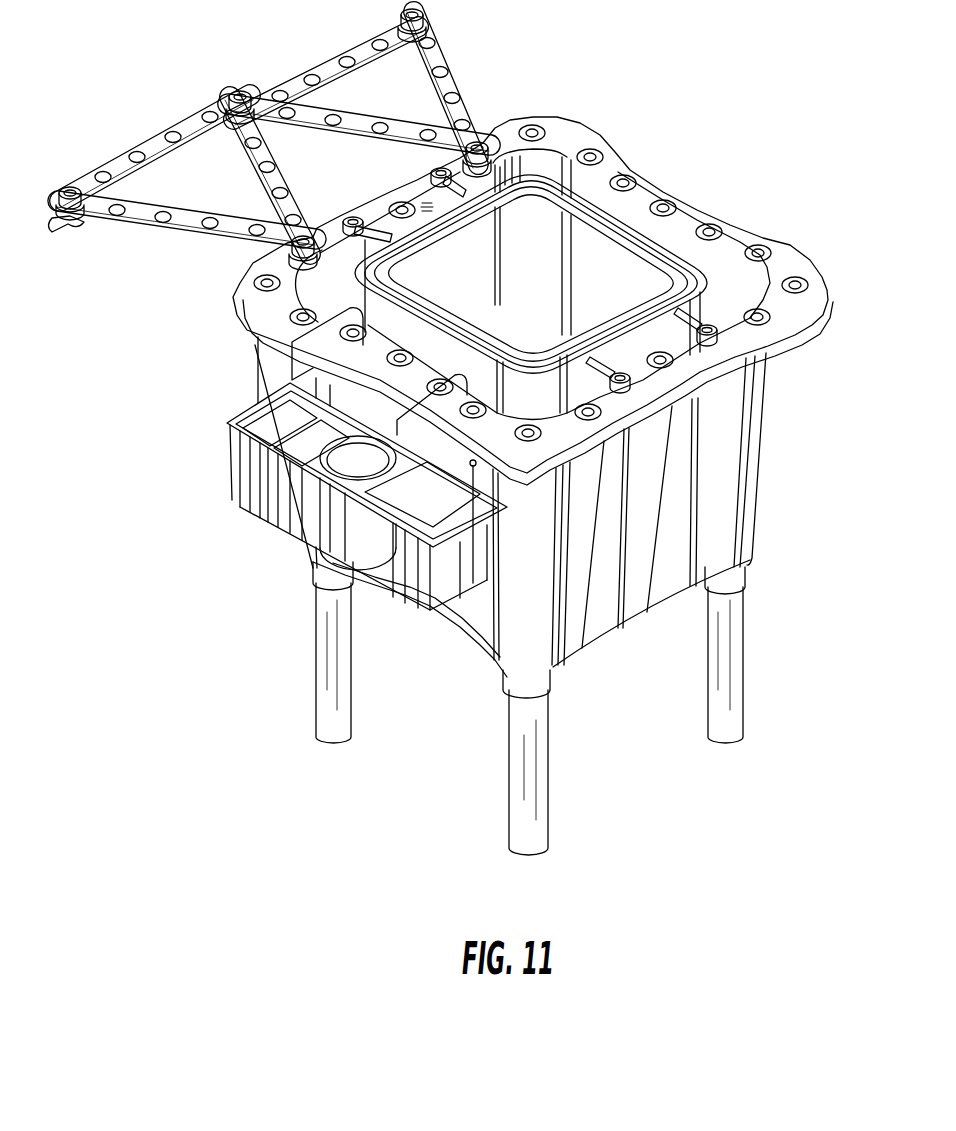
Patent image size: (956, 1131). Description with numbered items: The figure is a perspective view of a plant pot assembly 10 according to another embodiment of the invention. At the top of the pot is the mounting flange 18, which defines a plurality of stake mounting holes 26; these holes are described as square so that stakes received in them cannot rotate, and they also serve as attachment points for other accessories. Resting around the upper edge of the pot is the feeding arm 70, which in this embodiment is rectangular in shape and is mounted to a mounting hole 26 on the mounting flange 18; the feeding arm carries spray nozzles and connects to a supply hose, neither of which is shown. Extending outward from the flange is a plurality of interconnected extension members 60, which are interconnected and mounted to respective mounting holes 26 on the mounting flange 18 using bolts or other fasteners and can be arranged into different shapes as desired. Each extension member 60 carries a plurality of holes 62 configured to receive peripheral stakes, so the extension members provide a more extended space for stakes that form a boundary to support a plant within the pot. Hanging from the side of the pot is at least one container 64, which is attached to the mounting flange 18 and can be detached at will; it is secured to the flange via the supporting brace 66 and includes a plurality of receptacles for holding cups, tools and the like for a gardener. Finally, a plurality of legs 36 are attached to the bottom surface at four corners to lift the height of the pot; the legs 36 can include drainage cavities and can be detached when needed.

The plant pot assembly 10 is at (757, 470).
The mounting flange 18 is at (657, 186).
The stake mounting holes 26 is at (767, 243).
The legs 36 is at (312, 670).
The interconnected extension members 60 is at (443, 47).
The holes 62 is at (177, 138).
The container 64 is at (282, 527).
The supporting brace 66 is at (253, 367).
The feeding arm 70 is at (560, 175).